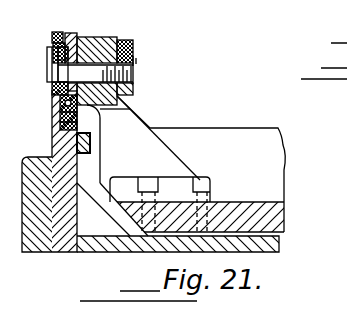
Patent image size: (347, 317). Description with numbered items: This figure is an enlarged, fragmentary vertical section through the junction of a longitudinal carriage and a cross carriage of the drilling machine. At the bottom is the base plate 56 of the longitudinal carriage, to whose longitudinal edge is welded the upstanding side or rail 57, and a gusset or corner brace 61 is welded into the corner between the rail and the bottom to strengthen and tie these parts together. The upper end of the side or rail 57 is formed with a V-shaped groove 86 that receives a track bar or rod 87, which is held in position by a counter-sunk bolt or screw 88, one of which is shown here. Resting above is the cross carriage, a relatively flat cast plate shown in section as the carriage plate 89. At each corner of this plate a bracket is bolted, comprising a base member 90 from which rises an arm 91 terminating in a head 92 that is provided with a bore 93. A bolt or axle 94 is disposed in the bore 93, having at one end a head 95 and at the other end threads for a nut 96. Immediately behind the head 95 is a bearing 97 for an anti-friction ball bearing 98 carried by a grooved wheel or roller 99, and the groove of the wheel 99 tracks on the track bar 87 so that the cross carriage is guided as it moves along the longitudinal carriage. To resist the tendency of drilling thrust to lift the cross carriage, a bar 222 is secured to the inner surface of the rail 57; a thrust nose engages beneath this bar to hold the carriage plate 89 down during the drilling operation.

The base plate 56 is at (278, 247).
The side or rail 57 is at (60, 250).
The gusset or corner brace 61 is at (97, 232).
The V-shaped groove 86 is at (60, 125).
The track bar or rod 87 is at (53, 113).
The counter-sunk bolt or screw 88 is at (67, 138).
The carriage plate 89 is at (286, 221).
The base member 90 is at (189, 178).
The arm 91 is at (153, 127).
The head 92 is at (105, 38).
The bore 93 is at (121, 40).
The bolt or axle 94 is at (134, 72).
The head 95 is at (50, 47).
The nut 96 is at (136, 62).
The bearing 97 is at (53, 83).
The anti-friction ball bearing 98 is at (53, 35).
The grooved wheel or roller 99 is at (62, 17).
The bar 222 is at (92, 143).